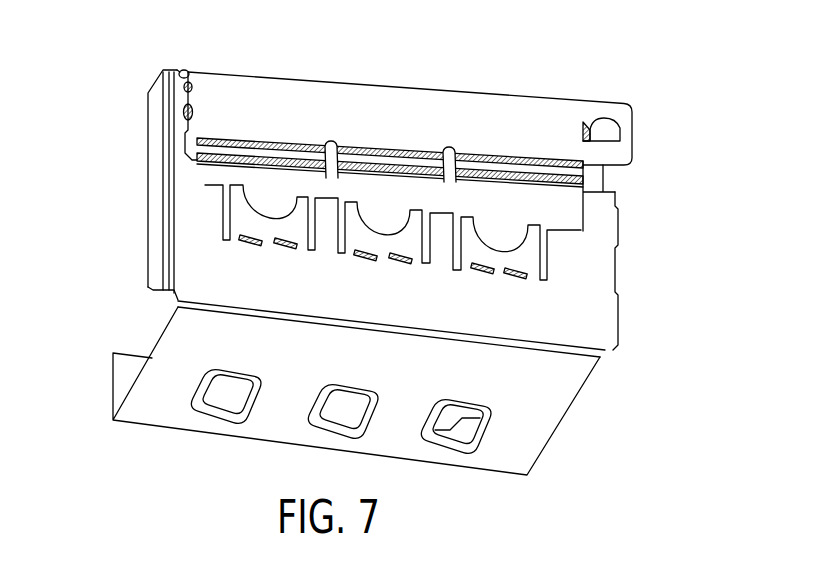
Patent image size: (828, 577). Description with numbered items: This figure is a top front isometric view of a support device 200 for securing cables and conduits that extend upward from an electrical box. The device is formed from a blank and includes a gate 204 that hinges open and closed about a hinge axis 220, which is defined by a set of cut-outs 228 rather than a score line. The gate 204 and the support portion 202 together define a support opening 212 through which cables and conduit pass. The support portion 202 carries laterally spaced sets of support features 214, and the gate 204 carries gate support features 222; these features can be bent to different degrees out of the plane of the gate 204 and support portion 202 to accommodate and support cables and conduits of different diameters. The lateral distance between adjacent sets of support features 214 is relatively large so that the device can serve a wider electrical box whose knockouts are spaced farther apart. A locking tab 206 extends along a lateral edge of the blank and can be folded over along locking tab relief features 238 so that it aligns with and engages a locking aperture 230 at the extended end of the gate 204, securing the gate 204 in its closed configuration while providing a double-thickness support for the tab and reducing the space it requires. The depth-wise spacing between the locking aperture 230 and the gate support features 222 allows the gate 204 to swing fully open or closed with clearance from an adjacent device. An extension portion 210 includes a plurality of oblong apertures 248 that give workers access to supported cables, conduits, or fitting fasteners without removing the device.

The support device 200 is at (133, 142).
The support portion 202 is at (604, 351).
The gate 204 is at (322, 90).
The locking tab 206 is at (603, 177).
The extension portion 210 is at (560, 420).
The support opening 212 is at (212, 167).
The support features 214 is at (267, 217).
The hinge axis 220 is at (181, 71).
The gate support features 222 is at (295, 150).
The cut-outs 228 is at (192, 113).
The locking aperture 230 is at (622, 138).
The locking tab relief features 238 is at (615, 257).
The oblong apertures 248 is at (193, 417).